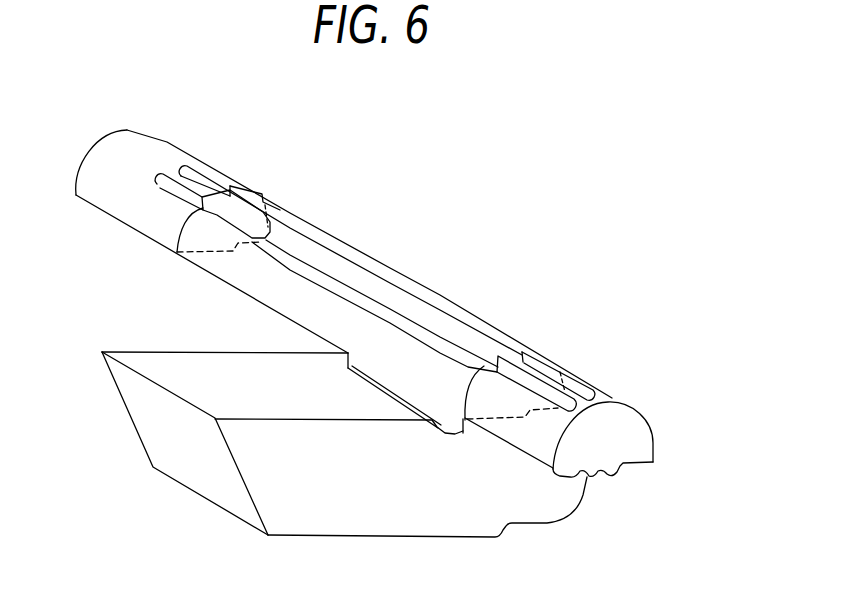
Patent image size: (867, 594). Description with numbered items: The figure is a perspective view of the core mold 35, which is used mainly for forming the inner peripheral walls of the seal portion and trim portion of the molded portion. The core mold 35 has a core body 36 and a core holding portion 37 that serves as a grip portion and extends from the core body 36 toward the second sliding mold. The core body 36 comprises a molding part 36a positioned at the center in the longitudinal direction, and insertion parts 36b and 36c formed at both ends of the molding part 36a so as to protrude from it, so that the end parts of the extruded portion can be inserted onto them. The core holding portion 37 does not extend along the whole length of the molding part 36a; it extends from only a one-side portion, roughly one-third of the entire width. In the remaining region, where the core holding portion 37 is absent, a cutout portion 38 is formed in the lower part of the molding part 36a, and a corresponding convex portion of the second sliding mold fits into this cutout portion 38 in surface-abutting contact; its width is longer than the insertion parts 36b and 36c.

The core mold 35 is at (337, 158).
The core body 36 is at (414, 253).
The molding part 36a is at (427, 287).
The insertion part 36b is at (167, 143).
The insertion part 36c is at (612, 393).
The core holding portion 37 is at (195, 363).
The cutout portion 38 is at (281, 339).